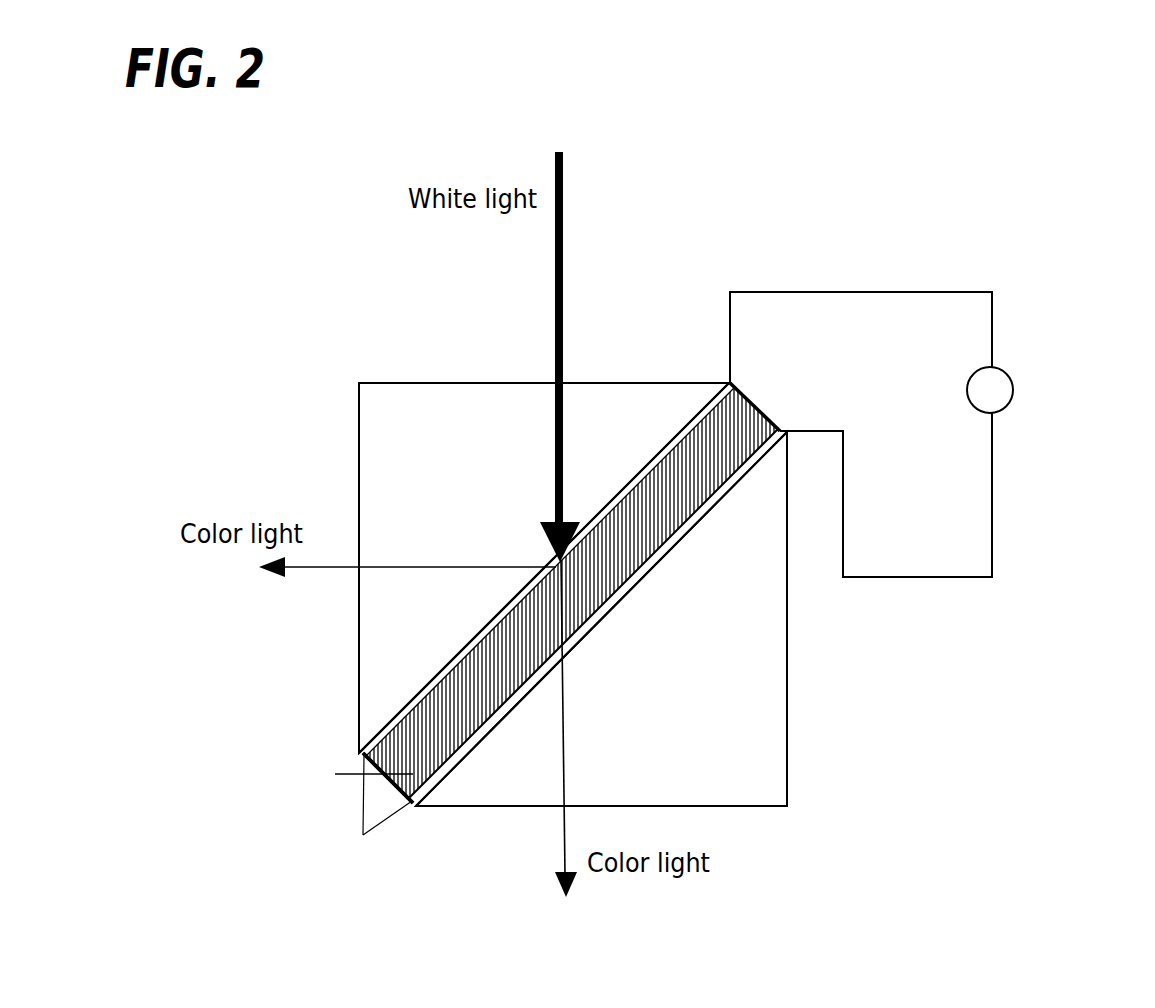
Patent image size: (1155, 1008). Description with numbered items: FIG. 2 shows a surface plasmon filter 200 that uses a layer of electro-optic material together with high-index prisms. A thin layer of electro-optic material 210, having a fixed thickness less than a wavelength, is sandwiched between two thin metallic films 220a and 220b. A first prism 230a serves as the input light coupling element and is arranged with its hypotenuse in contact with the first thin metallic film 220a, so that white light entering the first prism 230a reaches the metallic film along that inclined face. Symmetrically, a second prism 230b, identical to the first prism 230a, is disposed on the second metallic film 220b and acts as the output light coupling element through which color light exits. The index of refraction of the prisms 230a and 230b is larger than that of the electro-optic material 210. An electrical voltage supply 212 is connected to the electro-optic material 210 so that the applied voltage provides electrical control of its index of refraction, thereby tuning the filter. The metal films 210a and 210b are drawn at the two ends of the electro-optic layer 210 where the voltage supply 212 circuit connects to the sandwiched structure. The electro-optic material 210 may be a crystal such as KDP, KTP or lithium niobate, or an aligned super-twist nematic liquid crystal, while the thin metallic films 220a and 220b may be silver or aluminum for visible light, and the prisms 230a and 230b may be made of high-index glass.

The color light modulating element 200 is at (200, 260).
The electro-optic material 210 is at (755, 403).
The metal film (first electrode) 210a is at (365, 758).
The metal film (second electrode) 210b is at (412, 804).
The electrical voltage supply 212 is at (1013, 390).
The first thin metallic film 220a is at (633, 473).
The second thin metallic film 220b is at (673, 543).
The first prism 230a is at (472, 485).
The second prism 230b is at (757, 666).